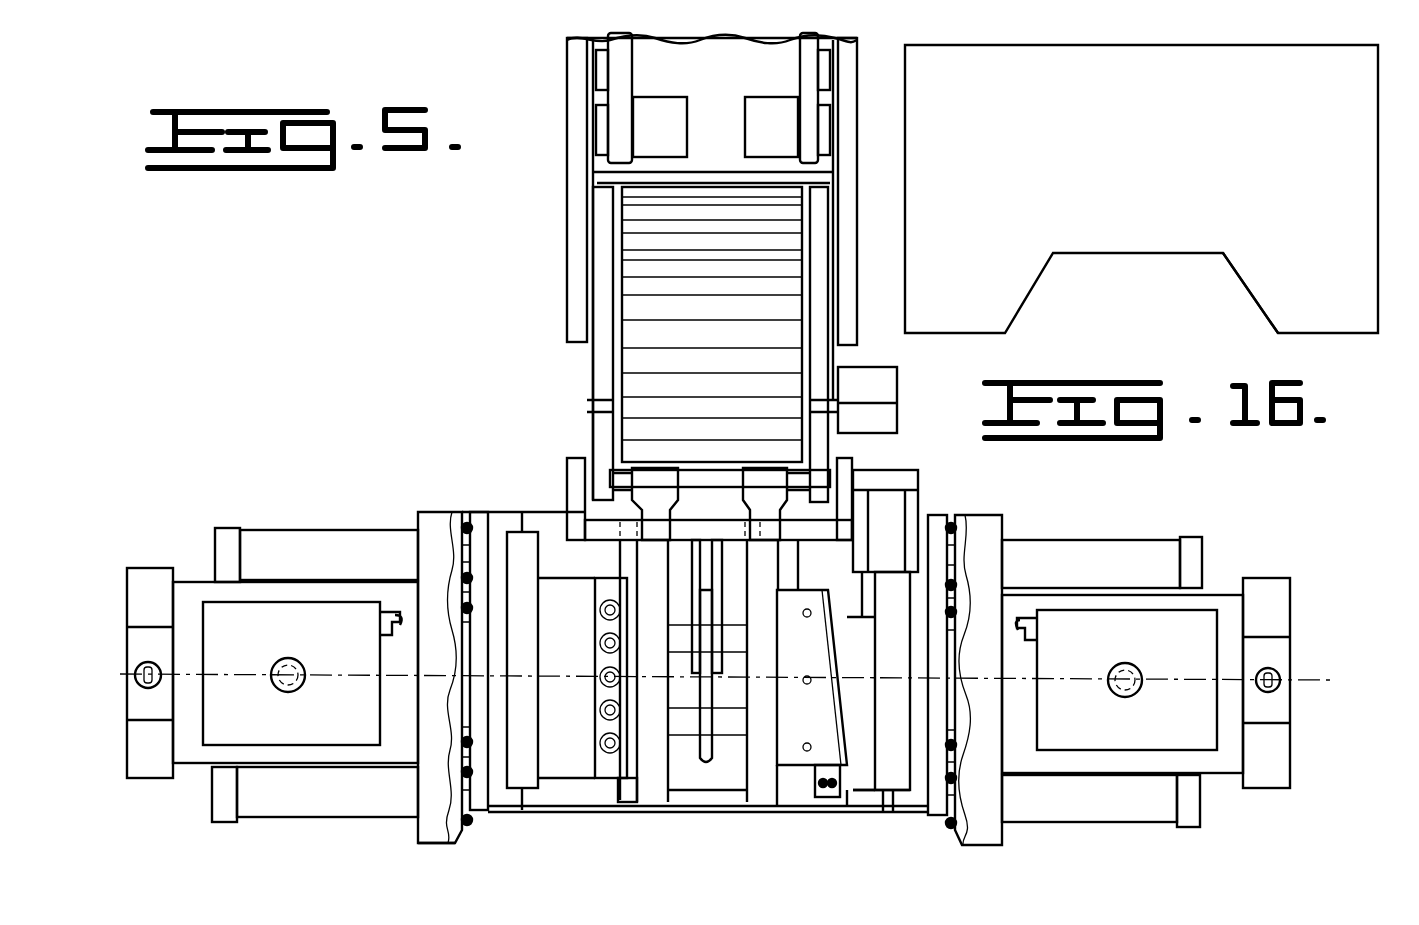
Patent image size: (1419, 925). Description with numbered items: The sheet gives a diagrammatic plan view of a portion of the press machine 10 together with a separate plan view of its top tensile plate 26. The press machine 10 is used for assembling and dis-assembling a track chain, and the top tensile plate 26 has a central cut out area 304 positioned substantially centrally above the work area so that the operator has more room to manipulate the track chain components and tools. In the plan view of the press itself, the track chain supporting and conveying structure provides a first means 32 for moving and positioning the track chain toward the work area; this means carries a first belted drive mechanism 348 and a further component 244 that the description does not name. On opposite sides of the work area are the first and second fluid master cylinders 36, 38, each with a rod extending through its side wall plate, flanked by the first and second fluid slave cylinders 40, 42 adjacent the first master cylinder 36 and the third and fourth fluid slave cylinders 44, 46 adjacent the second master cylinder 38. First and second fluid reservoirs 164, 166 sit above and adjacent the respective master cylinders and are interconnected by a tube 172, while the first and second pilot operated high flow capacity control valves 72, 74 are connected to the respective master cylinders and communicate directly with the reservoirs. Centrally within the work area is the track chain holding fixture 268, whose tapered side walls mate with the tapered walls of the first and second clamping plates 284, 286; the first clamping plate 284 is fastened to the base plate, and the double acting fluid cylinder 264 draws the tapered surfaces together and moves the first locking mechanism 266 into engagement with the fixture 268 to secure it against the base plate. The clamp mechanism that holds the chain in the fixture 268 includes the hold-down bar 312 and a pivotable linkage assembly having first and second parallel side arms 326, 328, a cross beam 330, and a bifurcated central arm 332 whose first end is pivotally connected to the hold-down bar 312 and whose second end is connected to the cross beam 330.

In FIG. 5, the press machine 10 is at (568, 860).
In FIG. 16, the top tensile plate 26 is at (1155, 170).
In FIG. 5, the first means for moving and positioning the track chain 32 is at (575, 363).
In FIG. 5, the first fluid master cylinder 36 is at (1225, 768).
In FIG. 5, the second fluid master cylinder 38 is at (197, 755).
In FIG. 5, the first fluid slave cylinder 40 is at (1098, 817).
In FIG. 5, the second fluid slave cylinder 42 is at (1158, 545).
In FIG. 5, the third fluid slave cylinder 44 is at (320, 805).
In FIG. 5, the fourth fluid slave cylinder 46 is at (350, 528).
In FIG. 5, the first pilot operated high flow capacity control valve 72 is at (1290, 658).
In FIG. 5, the second pilot operated high flow capacity control valve 74 is at (125, 686).
In FIG. 5, the first fluid reservoir 164 is at (1147, 651).
In FIG. 5, the second fluid reservoir 166 is at (282, 641).
In FIG. 5, the tube 172 is at (385, 628).
In FIG. 5, the drive motor 244 is at (898, 392).
In FIG. 5, the double acting fluid cylinder 264 is at (912, 510).
In FIG. 5, the first locking mechanism 266 is at (880, 800).
In FIG. 5, the track chain holding fixture 268 is at (704, 797).
In FIG. 5, the first clamping plate 284 is at (590, 638).
In FIG. 5, the second clamping plate 286 is at (812, 758).
In FIG. 16, the central cut out area 304 is at (1237, 285).
In FIG. 5, the hold-down bar 312 is at (700, 697).
In FIG. 5, the first parallel side arm 326 is at (573, 478).
In FIG. 5, the second parallel side arm 328 is at (850, 468).
In FIG. 5, the cross beam 330 is at (660, 530).
In FIG. 5, the bifurcated central arm 332 is at (718, 608).
In FIG. 5, the first belted drive mechanism 348 is at (738, 314).